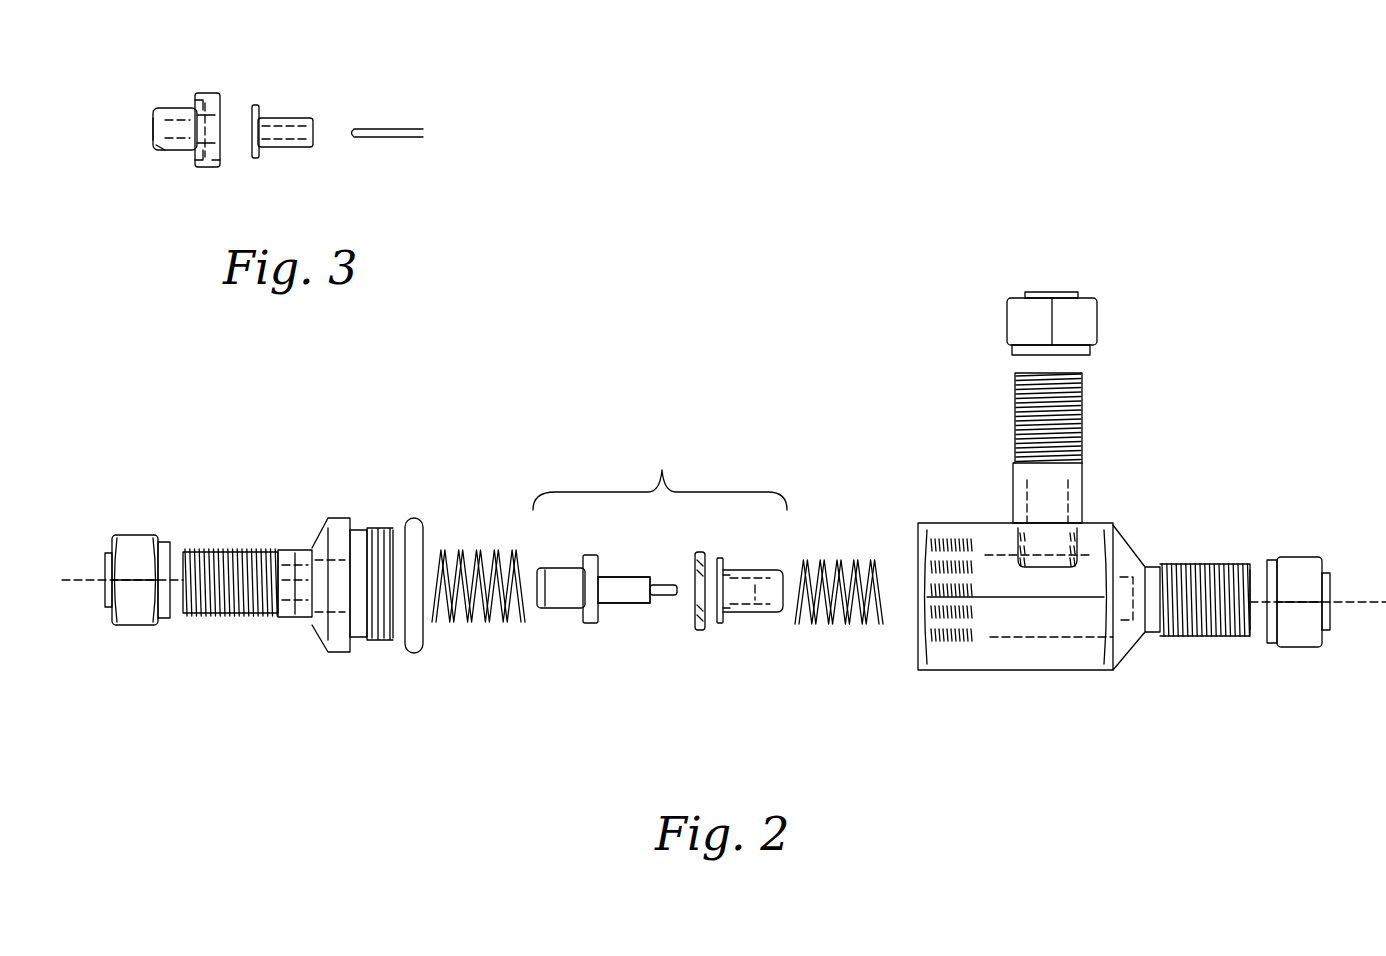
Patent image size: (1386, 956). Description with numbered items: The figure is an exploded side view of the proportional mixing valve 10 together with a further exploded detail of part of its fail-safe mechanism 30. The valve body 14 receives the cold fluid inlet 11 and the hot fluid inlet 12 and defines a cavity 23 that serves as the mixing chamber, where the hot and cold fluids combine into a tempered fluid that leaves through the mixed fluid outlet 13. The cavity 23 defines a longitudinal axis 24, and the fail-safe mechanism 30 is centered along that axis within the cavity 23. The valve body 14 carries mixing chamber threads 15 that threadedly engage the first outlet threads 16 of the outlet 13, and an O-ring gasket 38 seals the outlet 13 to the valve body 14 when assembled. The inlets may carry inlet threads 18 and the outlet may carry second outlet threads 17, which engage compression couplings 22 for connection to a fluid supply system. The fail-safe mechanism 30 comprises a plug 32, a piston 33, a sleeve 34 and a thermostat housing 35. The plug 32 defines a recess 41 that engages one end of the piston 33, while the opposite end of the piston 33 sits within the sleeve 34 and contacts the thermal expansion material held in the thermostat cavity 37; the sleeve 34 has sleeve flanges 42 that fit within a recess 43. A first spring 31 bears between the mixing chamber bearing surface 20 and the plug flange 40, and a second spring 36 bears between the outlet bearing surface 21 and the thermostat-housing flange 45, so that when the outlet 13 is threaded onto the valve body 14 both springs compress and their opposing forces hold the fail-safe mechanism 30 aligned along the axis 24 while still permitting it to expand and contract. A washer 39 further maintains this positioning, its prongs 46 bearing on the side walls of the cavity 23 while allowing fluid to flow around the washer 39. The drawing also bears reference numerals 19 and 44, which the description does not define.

In FIG. 2, the mixing valve 10 is at (1032, 716).
In FIG. 2, the cold fluid inlet 11 is at (1082, 507).
In FIG. 2, the hot fluid inlet 12 is at (1157, 563).
In FIG. 2, the mixed fluid outlet 13 is at (288, 550).
In FIG. 2, the valve body 14 is at (1000, 643).
In FIG. 2, the mixing chamber threads 15 is at (950, 537).
In FIG. 2, the first outlet threads 16 is at (383, 527).
In FIG. 2, the second outlet threads 17 is at (218, 547).
In FIG. 2, the inlet threads 18 is at (1233, 563).
In FIG. 2, the threads 19 is at (1083, 400).
In FIG. 2, the mixing chamber bearing surface 20 is at (1145, 567).
In FIG. 2, the outlet bearing surface 21 is at (312, 550).
In FIG. 2, the compression couplings 22 is at (135, 560).
In FIG. 2, the cavity 23 is at (1052, 617).
In FIG. 2, the longitudinal axis 24 is at (85, 577).
In FIG. 2, the fail-safe mechanism 30 is at (665, 583).
In FIG. 2, the first spring 31 is at (862, 627).
In FIG. 2, the plug 32 is at (747, 572).
In FIG. 3, the piston 33 is at (393, 130).
In FIG. 2, the piston 33 is at (660, 587).
In FIG. 3, the sleeve 34 is at (283, 125).
In FIG. 2, the sleeve 34 is at (608, 603).
In FIG. 3, the thermostat housing 35 is at (167, 107).
In FIG. 2, the thermostat housing 35 is at (552, 608).
In FIG. 2, the second spring 36 is at (500, 620).
In FIG. 3, the thermostat cavity 37 is at (175, 120).
In FIG. 2, the O-ring gasket 38 is at (408, 520).
In FIG. 2, the washer 39 is at (693, 607).
In FIG. 2, the plug flange 40 is at (725, 617).
In FIG. 2, the recess 41 is at (753, 590).
In FIG. 3, the sleeve flanges 42 is at (260, 103).
In FIG. 3, the recess 43 is at (215, 160).
In FIG. 3, the recess 44 is at (163, 146).
In FIG. 3, the thermostat-housing flange 45 is at (198, 95).
In FIG. 2, the prongs 46 is at (693, 565).